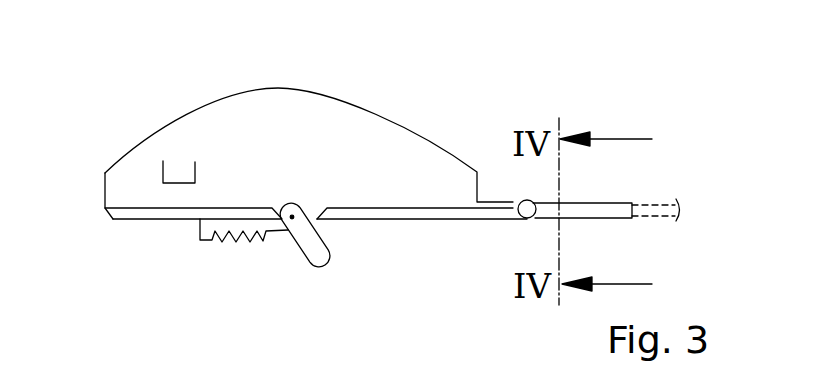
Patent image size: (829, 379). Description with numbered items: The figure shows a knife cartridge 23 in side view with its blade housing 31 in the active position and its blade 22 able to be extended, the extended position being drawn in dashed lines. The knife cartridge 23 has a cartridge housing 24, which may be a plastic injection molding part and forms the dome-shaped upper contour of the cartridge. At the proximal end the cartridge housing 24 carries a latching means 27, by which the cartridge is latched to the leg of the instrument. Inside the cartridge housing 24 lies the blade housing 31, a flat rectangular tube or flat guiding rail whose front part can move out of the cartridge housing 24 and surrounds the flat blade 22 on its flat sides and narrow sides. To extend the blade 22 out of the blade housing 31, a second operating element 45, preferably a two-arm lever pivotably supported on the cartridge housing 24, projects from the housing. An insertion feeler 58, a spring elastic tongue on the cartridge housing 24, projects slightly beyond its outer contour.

The blade 22 is at (662, 220).
The knife cartridge 23 is at (410, 100).
The cartridge housing 24 is at (303, 122).
The latching means 27 is at (92, 186).
The blade housing 31 is at (597, 207).
The second operating element 45 is at (317, 255).
The insertion feeler 58 is at (188, 175).